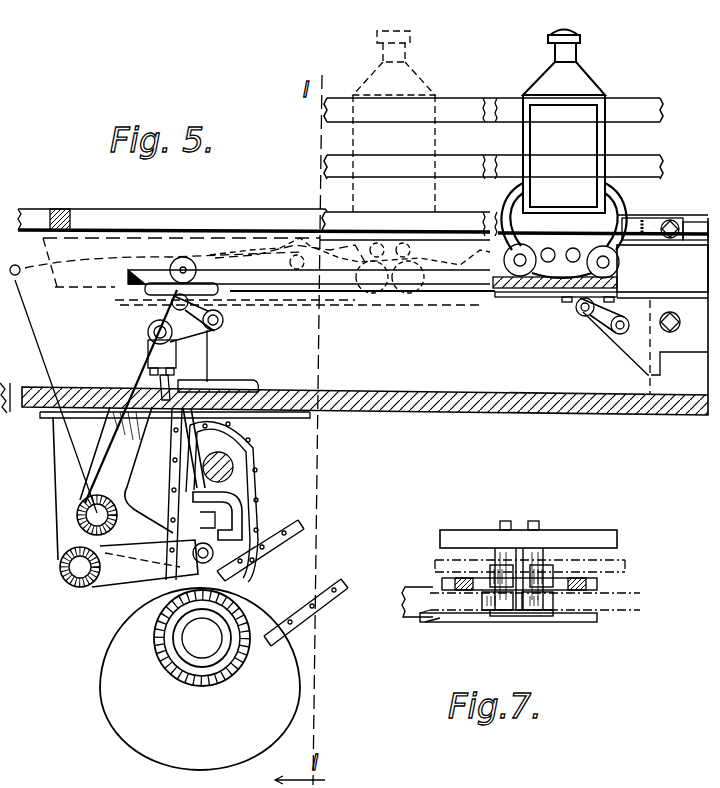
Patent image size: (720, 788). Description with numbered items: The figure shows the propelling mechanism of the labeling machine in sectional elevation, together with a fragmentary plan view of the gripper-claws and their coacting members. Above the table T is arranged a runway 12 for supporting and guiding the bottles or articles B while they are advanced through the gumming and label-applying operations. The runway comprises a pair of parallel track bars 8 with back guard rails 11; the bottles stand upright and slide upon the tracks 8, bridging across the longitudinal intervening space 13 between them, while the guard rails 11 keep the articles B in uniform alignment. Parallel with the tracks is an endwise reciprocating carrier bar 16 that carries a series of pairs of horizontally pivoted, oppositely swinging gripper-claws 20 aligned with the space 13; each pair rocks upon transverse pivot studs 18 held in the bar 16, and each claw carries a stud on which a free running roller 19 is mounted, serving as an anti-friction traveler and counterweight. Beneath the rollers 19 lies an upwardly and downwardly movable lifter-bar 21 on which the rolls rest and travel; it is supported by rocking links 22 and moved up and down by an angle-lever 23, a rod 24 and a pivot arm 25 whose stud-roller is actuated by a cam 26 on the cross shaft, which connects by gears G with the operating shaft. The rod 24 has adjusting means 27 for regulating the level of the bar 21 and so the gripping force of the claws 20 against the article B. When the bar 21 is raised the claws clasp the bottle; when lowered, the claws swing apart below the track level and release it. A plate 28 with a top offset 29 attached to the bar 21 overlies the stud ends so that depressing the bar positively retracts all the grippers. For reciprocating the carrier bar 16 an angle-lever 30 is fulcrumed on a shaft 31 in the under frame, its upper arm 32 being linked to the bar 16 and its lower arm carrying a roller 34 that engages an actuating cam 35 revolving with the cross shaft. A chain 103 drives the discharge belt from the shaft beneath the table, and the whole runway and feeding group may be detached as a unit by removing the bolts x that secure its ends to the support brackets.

In FIG. 5, the track bars 8 is at (282, 222).
In FIG. 7, the track bars 8 is at (620, 565).
In FIG. 5, the back guard rails 11 is at (499, 106).
In FIG. 5, the runway 12 is at (363, 209).
In FIG. 5, the intervening space 13 is at (55, 209).
In FIG. 7, the intervening space 13 is at (625, 583).
In FIG. 5, the reciprocating carrier bar 16 is at (645, 306).
In FIG. 7, the reciprocating carrier bar 16 is at (440, 540).
In FIG. 5, the pivot studs 18 is at (568, 263).
In FIG. 7, the pivot studs 18 is at (526, 616).
In FIG. 5, the roller 19 is at (508, 297).
In FIG. 7, the roller 19 is at (492, 588).
In FIG. 5, the gripper-claws 20 is at (508, 206).
In FIG. 7, the gripper-claws 20 is at (480, 582).
In FIG. 5, the lifter-bar 21 is at (385, 290).
In FIG. 7, the lifter-bar 21 is at (418, 602).
In FIG. 5, the rocking links 22 is at (224, 318).
In FIG. 5, the angle-lever 23 is at (212, 340).
In FIG. 5, the rod 24 is at (190, 450).
In FIG. 5, the pivot arm 25 is at (142, 572).
In FIG. 5, the cam 26 is at (246, 606).
In FIG. 5, the adjusting means 27 is at (236, 515).
In FIG. 7, the strip or plate 28 is at (590, 622).
In FIG. 7, the top offset or flange 29 is at (446, 622).
In FIG. 5, the angle-lever 30 is at (118, 489).
In FIG. 5, the shaft 31 is at (78, 517).
In FIG. 5, the upper arm 32 is at (160, 306).
In FIG. 5, the roller 34 is at (50, 420).
In FIG. 5, the actuating cam 35 is at (108, 688).
In FIG. 5, the chain 103 is at (236, 468).
In FIG. 5, the bottles or articles B is at (564, 122).
In FIG. 5, the table T is at (380, 394).
In FIG. 5, the gears G is at (173, 695).
In FIG. 5, the bolts x is at (677, 325).